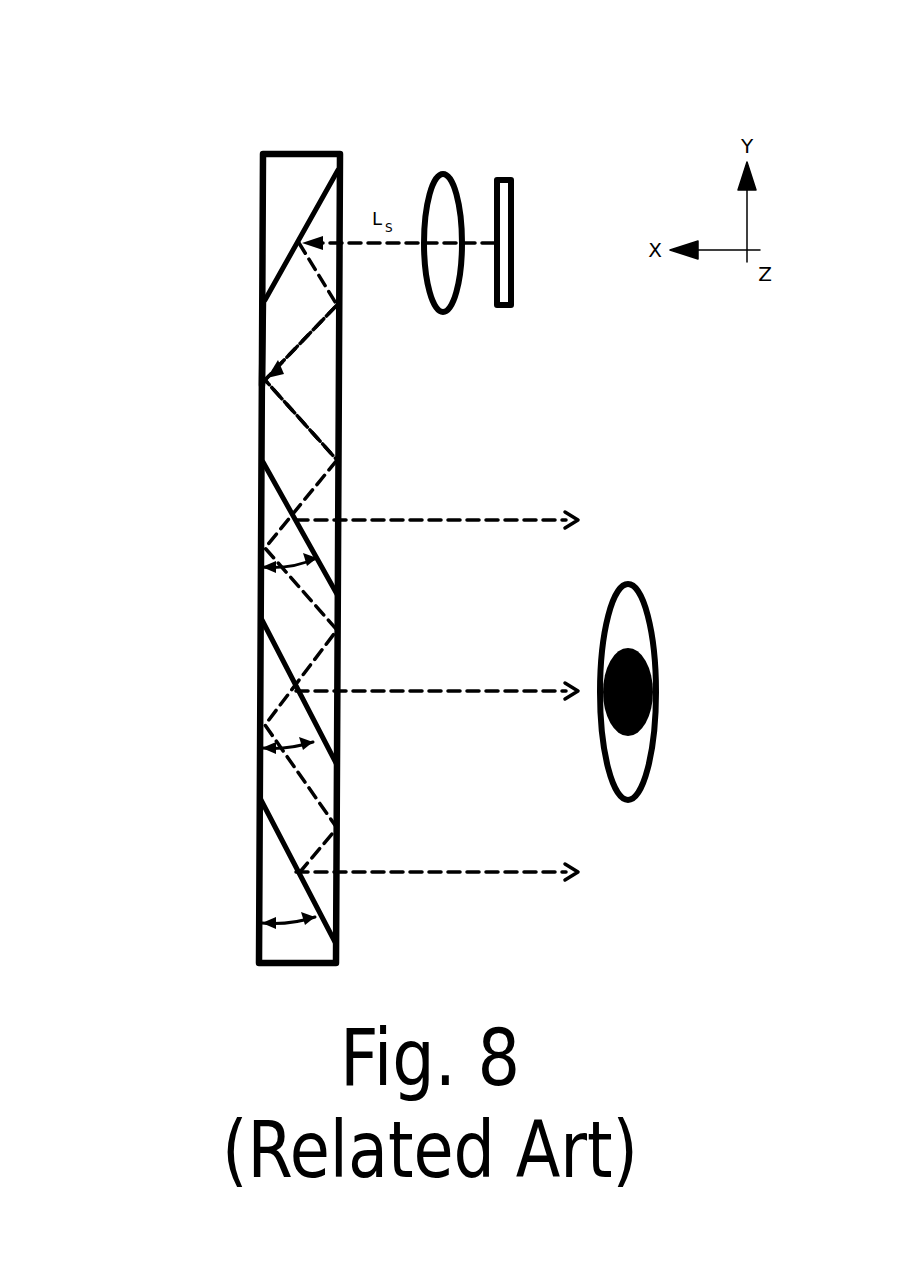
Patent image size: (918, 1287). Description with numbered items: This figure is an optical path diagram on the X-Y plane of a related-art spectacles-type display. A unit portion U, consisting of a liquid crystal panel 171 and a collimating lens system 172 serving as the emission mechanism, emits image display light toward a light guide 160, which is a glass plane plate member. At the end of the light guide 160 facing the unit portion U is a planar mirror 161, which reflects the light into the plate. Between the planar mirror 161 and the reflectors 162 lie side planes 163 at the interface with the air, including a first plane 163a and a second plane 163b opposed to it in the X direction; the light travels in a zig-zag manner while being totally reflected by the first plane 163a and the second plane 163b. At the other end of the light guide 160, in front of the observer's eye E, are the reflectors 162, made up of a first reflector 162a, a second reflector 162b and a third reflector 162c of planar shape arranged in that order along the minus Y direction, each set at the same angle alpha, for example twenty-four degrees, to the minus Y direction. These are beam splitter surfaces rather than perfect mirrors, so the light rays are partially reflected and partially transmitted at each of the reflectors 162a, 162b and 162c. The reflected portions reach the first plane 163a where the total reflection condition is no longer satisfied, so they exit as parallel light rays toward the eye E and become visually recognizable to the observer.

The light guide 160 is at (292, 138).
The planar mirror 161 is at (285, 263).
The reflectors 162 is at (133, 552).
The first reflector 162a is at (287, 505).
The second reflector 162b is at (290, 678).
The third reflector 162c is at (291, 858).
The side planes 163 is at (128, 312).
The first plane 163a is at (280, 398).
The second plane 163b is at (262, 336).
The liquid crystal panel 171 is at (508, 177).
The collimating lens system 172 is at (445, 172).
The unit portion U is at (418, 60).
The eye E is at (633, 800).